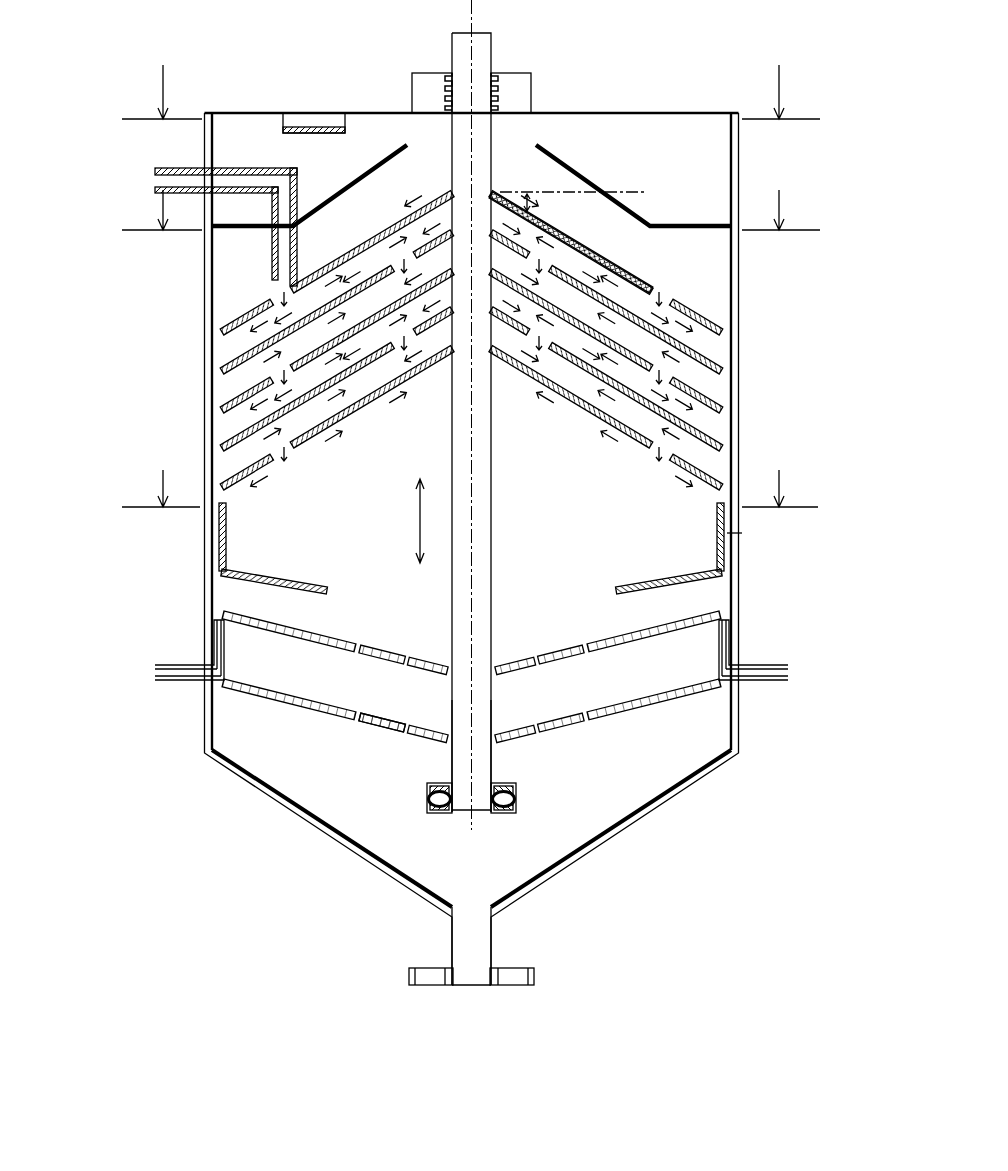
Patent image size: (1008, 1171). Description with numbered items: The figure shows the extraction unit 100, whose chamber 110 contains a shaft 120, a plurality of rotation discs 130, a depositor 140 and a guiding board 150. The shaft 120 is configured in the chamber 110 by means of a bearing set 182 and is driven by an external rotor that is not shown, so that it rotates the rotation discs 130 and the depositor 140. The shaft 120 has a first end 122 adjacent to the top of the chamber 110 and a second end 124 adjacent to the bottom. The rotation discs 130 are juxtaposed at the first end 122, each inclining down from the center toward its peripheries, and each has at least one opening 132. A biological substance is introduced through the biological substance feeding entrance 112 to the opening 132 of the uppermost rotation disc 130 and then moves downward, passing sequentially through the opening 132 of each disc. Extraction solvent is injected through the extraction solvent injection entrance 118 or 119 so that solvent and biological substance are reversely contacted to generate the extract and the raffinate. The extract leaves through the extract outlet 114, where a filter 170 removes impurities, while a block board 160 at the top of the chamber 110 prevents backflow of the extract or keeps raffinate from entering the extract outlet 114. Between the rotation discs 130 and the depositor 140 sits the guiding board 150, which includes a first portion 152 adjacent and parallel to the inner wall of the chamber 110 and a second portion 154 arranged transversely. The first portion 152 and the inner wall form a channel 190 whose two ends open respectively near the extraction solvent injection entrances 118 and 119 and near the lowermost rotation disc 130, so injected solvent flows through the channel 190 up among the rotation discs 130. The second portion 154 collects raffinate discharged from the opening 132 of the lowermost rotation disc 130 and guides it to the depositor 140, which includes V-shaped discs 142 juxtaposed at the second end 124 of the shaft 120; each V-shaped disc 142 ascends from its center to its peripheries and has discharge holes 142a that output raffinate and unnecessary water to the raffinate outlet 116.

The extraction unit 100 is at (744, 1013).
The chamber 110 is at (737, 380).
The biological substance feeding entrance 112 is at (232, 171).
The extract outlet 114 is at (297, 126).
The raffinate outlet 116 is at (472, 932).
The extraction solvent injection entrance 118 is at (742, 666).
The extraction solvent injection entrance 119 is at (188, 664).
The shaft 120 is at (490, 497).
The first end 122 is at (485, 148).
The second end 124 is at (491, 752).
The rotation disc 130 is at (697, 314).
The opening 132 is at (679, 305).
The depositor 140 is at (803, 690).
The V-shaped disc 142 is at (683, 623).
The discharge hole 142a is at (393, 746).
The guiding board 150 is at (612, 492).
The first portion 152 is at (716, 538).
The second portion 154 is at (686, 575).
The block board 160 is at (596, 187).
The filter 170 is at (330, 128).
The bearing set 182 is at (516, 798).
The channel 190 is at (737, 538).